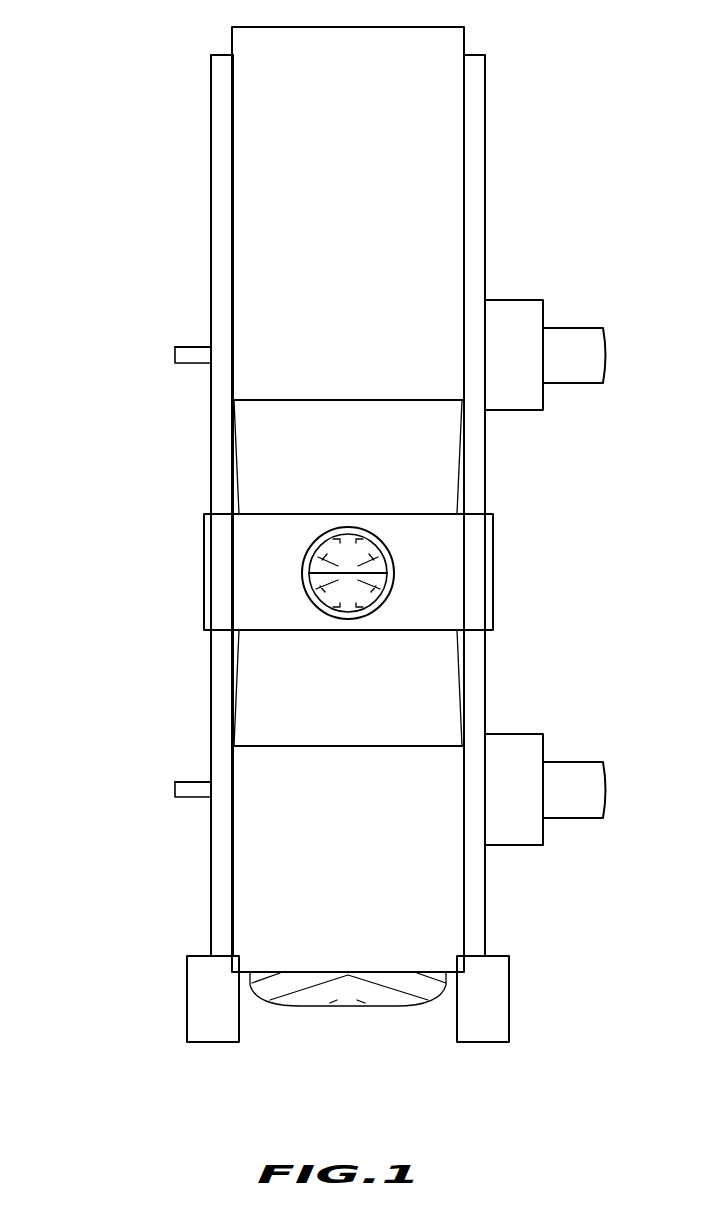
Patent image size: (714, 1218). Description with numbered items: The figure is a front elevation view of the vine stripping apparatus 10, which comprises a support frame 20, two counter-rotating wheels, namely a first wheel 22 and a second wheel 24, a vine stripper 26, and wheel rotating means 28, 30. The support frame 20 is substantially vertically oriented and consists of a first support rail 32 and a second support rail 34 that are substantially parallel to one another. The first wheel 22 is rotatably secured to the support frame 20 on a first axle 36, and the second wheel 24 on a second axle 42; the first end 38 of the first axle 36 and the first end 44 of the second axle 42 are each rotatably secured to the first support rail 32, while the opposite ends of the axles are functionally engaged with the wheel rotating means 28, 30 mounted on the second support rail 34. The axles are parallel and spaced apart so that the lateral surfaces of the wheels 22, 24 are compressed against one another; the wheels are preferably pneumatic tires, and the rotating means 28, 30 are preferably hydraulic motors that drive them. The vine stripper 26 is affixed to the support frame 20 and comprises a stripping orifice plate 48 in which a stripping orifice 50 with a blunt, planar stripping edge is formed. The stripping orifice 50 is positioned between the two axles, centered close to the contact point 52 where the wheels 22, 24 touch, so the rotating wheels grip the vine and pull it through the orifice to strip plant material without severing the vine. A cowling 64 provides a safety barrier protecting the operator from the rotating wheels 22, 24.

The vine stripping apparatus 10 is at (113, 200).
The support frame 20 is at (200, 1002).
The first wheel 22 is at (383, 550).
The second wheel 24 is at (383, 598).
The vine stripper 26 is at (472, 585).
The wheel rotating means 28 is at (522, 308).
The wheel rotating means 30 is at (522, 742).
The first support rail 32 is at (222, 415).
The second support rail 34 is at (470, 465).
The first axle 36 is at (177, 356).
The first end of first axle 38 is at (189, 348).
The second axle 42 is at (177, 790).
The first end of second axle 44 is at (190, 782).
The stripping orifice plate 48 is at (258, 618).
The stripping orifice 50 is at (304, 561).
The contact point 52 is at (305, 586).
The cowling 64 is at (360, 221).